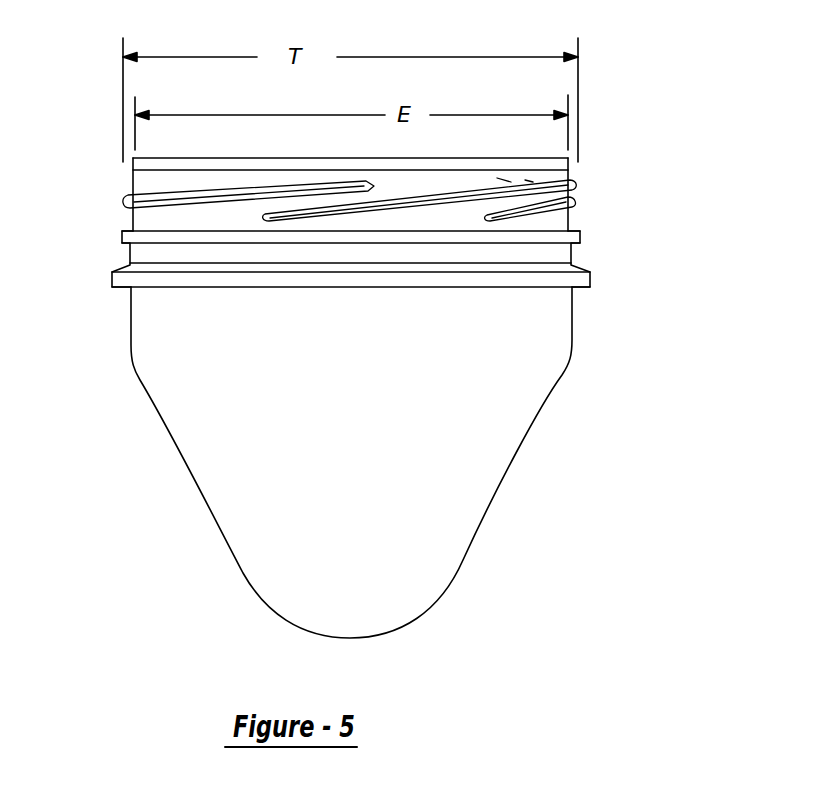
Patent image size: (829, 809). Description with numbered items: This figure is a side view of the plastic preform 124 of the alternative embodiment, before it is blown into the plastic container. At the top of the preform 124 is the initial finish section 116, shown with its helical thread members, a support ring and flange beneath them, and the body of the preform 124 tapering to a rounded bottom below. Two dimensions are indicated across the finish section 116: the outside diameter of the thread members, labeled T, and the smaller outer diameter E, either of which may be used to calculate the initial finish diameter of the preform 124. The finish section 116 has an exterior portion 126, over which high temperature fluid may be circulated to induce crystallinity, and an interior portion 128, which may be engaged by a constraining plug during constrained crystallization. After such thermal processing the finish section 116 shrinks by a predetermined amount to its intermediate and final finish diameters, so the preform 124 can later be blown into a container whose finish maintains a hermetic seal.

The finish section 116 is at (576, 218).
The preform 124 is at (425, 502).
The exterior portion 126 is at (158, 181).
The interior portion 128 is at (495, 160).